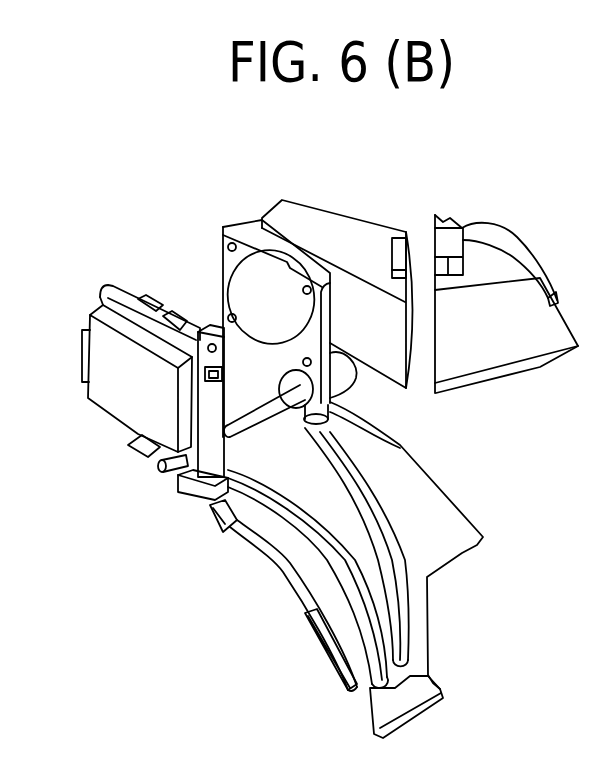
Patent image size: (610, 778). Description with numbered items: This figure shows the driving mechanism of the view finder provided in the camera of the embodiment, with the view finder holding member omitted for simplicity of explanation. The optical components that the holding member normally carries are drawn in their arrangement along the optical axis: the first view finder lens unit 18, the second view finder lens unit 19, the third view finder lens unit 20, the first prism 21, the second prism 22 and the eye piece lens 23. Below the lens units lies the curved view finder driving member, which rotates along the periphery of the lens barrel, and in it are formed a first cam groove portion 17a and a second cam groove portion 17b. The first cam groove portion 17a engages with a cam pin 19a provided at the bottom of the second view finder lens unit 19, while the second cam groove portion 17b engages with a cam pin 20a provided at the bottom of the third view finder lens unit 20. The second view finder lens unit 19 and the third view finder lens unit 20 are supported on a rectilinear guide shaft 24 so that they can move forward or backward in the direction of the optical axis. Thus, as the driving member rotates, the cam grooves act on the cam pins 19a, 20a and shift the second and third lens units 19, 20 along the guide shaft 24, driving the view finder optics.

The first cam groove portion 17a is at (355, 693).
The second cam groove portion 17b is at (432, 675).
The first view finder lens unit 18 is at (93, 320).
The second view finder lens unit 19 is at (130, 297).
The cam pin 19a is at (182, 498).
The third view finder lens unit 20 is at (224, 233).
The cam pin 20a is at (383, 438).
The first prism 21 is at (345, 227).
The second prism 22 is at (483, 230).
The eye piece lens 23 is at (518, 240).
The rectilinear guide shaft 24 is at (160, 465).